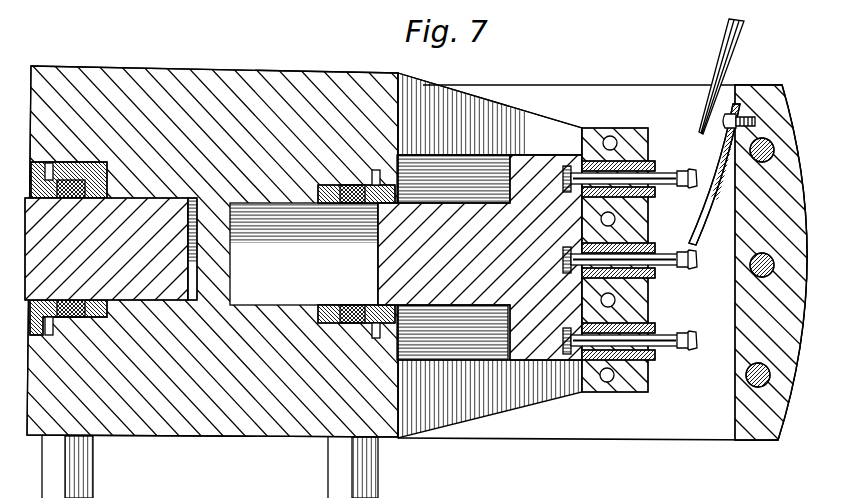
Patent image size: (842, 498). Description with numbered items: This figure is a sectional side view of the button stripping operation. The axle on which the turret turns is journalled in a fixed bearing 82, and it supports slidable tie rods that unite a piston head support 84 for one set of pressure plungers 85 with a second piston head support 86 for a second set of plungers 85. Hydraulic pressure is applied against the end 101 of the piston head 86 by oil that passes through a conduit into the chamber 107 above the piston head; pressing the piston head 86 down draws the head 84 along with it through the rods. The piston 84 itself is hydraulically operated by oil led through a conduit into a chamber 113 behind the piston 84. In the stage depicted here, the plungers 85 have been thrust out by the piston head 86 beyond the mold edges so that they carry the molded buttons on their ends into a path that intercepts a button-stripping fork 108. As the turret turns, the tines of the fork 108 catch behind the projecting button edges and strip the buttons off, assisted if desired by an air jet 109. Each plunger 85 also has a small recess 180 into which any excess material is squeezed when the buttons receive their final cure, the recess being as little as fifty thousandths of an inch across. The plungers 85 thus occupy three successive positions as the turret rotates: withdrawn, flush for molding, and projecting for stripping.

The chamber 107 is at (303, 281).
The piston head support 84 is at (180, 288).
The chamber 113 is at (190, 258).
The end of the piston head 101 is at (385, 288).
The fixed bearing 82 is at (695, 425).
The piston head support 86 is at (542, 350).
The recess 180 is at (662, 350).
The pressure plunger 85 is at (662, 338).
The air jet 109 is at (715, 37).
The button-stripping fork 108 is at (702, 216).